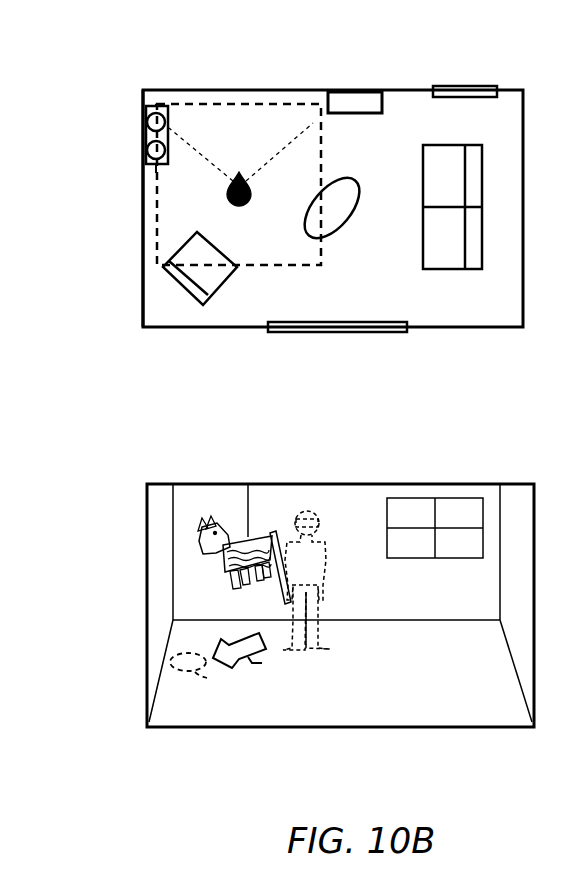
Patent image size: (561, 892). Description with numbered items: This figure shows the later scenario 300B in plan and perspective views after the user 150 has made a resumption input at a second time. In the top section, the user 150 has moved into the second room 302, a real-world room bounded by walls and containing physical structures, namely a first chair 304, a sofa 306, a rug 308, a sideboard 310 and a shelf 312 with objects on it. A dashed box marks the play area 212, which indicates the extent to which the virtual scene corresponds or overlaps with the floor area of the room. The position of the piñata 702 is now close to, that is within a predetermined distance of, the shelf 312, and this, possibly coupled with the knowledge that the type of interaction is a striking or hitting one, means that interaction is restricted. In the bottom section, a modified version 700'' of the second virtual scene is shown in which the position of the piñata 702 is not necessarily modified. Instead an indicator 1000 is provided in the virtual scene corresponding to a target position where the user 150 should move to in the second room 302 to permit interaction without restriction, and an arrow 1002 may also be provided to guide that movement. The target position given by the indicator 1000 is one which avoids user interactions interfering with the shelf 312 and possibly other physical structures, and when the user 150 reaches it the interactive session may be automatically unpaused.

The scenario 300B is at (152, 57).
The second room 302 is at (143, 216).
The first chair 304 is at (215, 263).
The sofa 306 is at (461, 189).
The rug 308 is at (345, 220).
The sideboard 310 is at (369, 110).
The shelf 312 is at (146, 153).
The play area 212 is at (302, 257).
The user 150 is at (251, 190).
The modified version of the second virtual scene 700'' is at (298, 574).
The piñata 702 is at (223, 568).
The indicator 1000 is at (203, 676).
The arrow 1002 is at (256, 663).